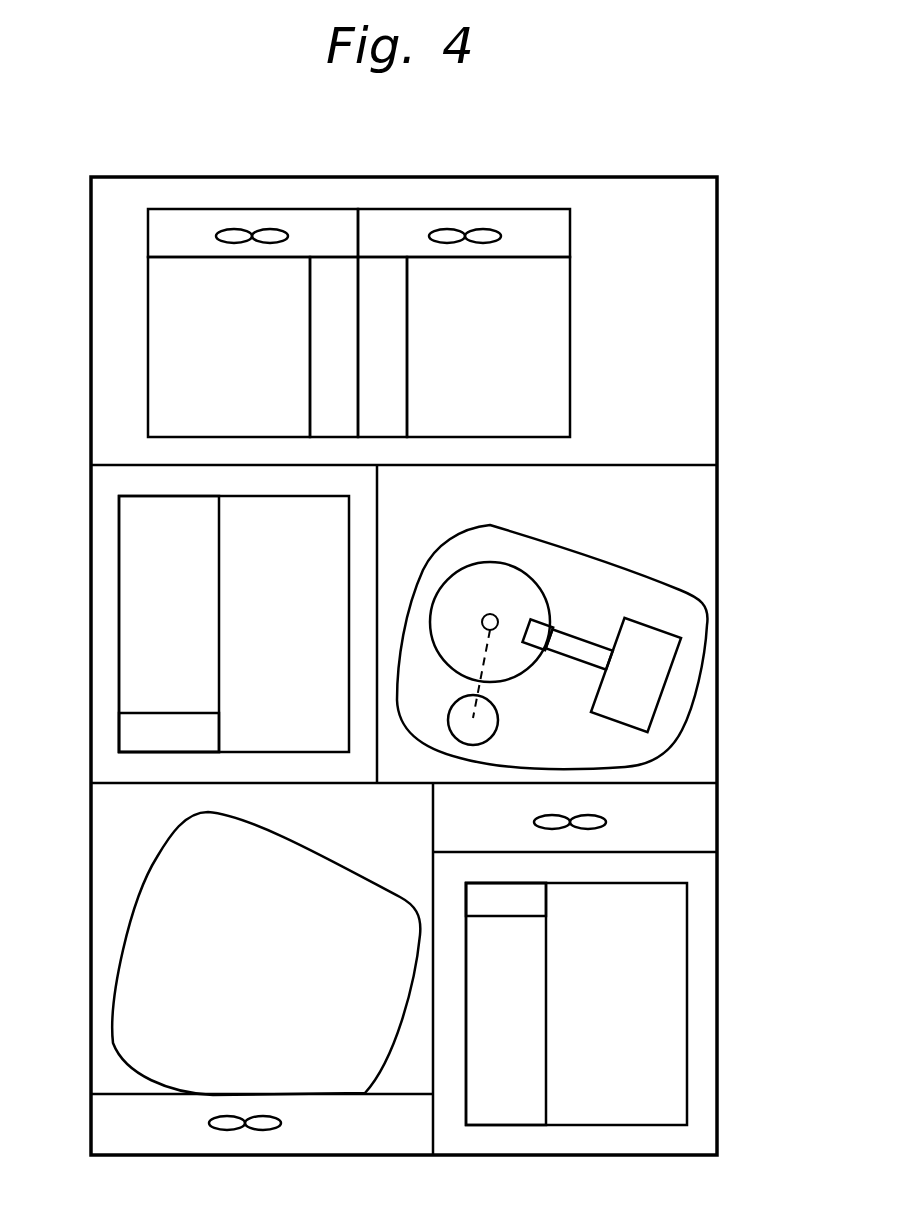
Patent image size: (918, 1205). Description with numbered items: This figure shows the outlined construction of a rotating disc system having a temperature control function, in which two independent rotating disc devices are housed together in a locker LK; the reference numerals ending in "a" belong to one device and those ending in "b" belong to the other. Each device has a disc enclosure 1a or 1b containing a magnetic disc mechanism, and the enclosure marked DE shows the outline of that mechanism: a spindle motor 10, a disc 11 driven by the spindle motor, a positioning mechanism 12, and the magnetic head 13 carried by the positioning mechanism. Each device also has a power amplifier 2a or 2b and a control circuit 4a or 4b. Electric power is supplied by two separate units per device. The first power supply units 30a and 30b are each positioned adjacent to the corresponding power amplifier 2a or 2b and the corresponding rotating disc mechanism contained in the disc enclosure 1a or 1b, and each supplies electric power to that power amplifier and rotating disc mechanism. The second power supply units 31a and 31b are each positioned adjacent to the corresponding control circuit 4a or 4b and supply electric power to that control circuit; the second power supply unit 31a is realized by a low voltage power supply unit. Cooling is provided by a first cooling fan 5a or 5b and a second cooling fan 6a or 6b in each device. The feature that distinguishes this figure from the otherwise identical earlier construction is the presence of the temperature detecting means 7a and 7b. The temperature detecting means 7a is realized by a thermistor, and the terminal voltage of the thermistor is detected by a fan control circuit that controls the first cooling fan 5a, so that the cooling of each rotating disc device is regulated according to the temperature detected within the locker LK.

The locker LK is at (717, 290).
The disc enclosure 1a is at (137, 1003).
The disc enclosure 1b is at (690, 648).
The power amplifier 2a is at (237, 519).
The power amplifier 2b is at (665, 1002).
The control circuit 4a is at (162, 417).
The control circuit 4b is at (520, 345).
The first cooling fan 5a is at (120, 1124).
The first cooling fan 5b is at (703, 820).
The second cooling fan 6a is at (162, 236).
The second cooling fan 6b is at (540, 236).
The temperature detecting means 7a is at (132, 743).
The temperature detecting means 7b is at (537, 900).
The spindle motor 10 is at (487, 726).
The disc 11 is at (441, 645).
The positioning mechanism 12 is at (605, 711).
The magnetic head 13 is at (548, 614).
The first power supply unit 30a is at (140, 636).
The first power supply unit 30b is at (540, 1105).
The second power supply unit 31a is at (318, 327).
The second power supply unit 31b is at (397, 412).
The dry etching station DE is at (403, 764).